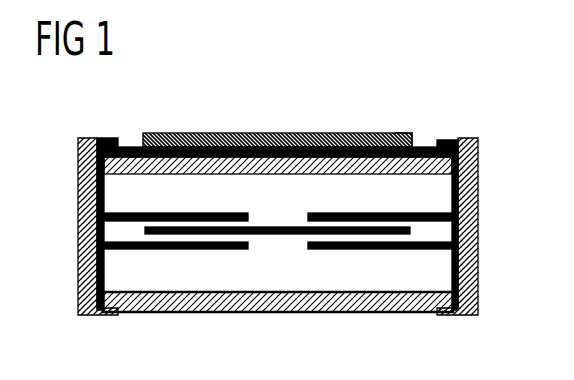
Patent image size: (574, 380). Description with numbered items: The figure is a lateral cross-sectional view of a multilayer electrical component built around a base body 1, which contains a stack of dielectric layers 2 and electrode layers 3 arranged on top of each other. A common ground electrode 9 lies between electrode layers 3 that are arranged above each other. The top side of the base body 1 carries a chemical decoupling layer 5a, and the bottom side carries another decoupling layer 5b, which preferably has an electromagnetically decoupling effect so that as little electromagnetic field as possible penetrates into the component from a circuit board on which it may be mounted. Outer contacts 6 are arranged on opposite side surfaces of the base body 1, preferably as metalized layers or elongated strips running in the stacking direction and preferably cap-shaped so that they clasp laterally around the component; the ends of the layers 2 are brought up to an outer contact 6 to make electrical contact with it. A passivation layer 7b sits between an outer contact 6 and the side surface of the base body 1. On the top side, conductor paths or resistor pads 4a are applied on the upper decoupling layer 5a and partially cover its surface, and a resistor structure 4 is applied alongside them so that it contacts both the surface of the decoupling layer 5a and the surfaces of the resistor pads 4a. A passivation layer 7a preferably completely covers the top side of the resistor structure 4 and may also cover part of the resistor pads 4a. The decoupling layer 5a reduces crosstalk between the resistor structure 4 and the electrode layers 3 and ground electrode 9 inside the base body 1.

The base body 1 is at (445, 197).
The dielectric layers 2 is at (110, 198).
The electrode layers 3 is at (450, 215).
The resistor structure 4 is at (282, 148).
The resistor pads 4a is at (397, 148).
The chemical decoupling layer 5a is at (116, 162).
The decoupling layer 5b is at (405, 303).
The outer contacts 6 is at (88, 275).
The passivation layer 7a is at (162, 150).
The passivation layer 7b is at (97, 183).
The common ground electrode 9 is at (258, 233).